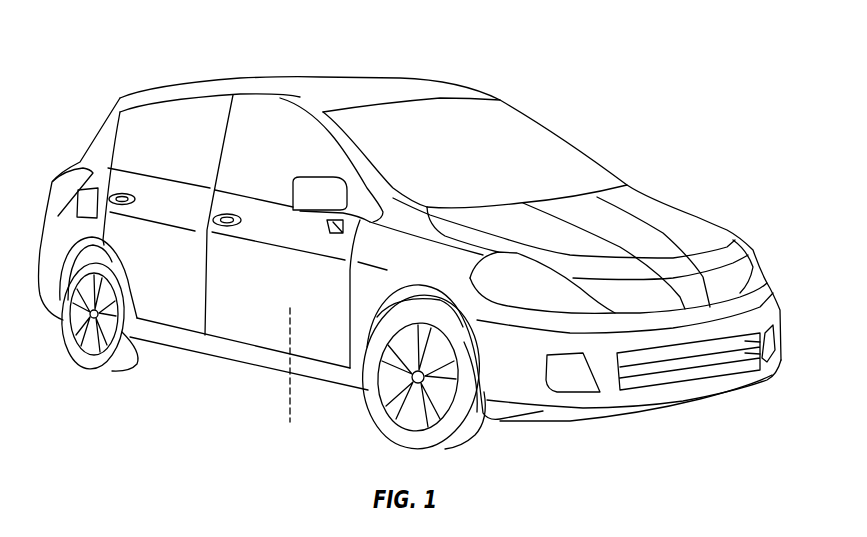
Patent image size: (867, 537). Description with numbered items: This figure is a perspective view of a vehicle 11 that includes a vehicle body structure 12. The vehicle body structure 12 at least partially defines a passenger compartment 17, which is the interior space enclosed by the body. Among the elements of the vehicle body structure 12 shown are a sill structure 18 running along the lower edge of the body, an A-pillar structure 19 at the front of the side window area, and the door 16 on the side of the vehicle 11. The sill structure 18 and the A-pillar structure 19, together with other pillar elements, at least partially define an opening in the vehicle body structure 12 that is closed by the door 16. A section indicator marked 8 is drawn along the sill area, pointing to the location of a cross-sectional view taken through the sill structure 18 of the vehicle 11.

The vehicle 11 is at (392, 57).
The vehicle body structure 12 is at (453, 80).
The passenger compartment 17 is at (527, 150).
The A-pillar structure 19 is at (367, 167).
The door 16 is at (230, 327).
The sill structure 18 is at (268, 360).
The section line 8- 8 is at (313, 424).